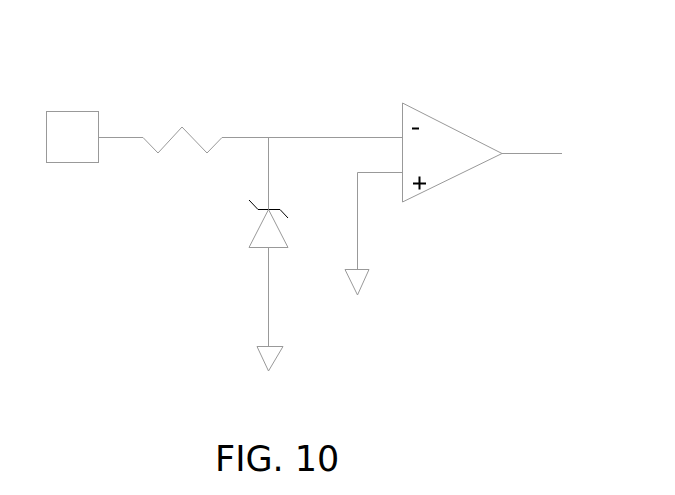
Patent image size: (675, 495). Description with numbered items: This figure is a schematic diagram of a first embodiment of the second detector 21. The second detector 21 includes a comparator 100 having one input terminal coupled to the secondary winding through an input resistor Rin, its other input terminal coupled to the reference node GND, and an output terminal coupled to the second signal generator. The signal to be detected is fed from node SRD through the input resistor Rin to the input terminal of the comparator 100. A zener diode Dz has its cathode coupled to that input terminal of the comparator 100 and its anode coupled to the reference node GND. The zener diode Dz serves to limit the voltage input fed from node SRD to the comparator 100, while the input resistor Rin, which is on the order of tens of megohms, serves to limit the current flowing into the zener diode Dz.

The second detector 21 is at (247, 31).
The comparator 100 is at (449, 123).
The node SRD is at (72, 160).
The input resistor Rin is at (182, 126).
The zener diode Dz is at (245, 224).
The reference node GND is at (240, 358).